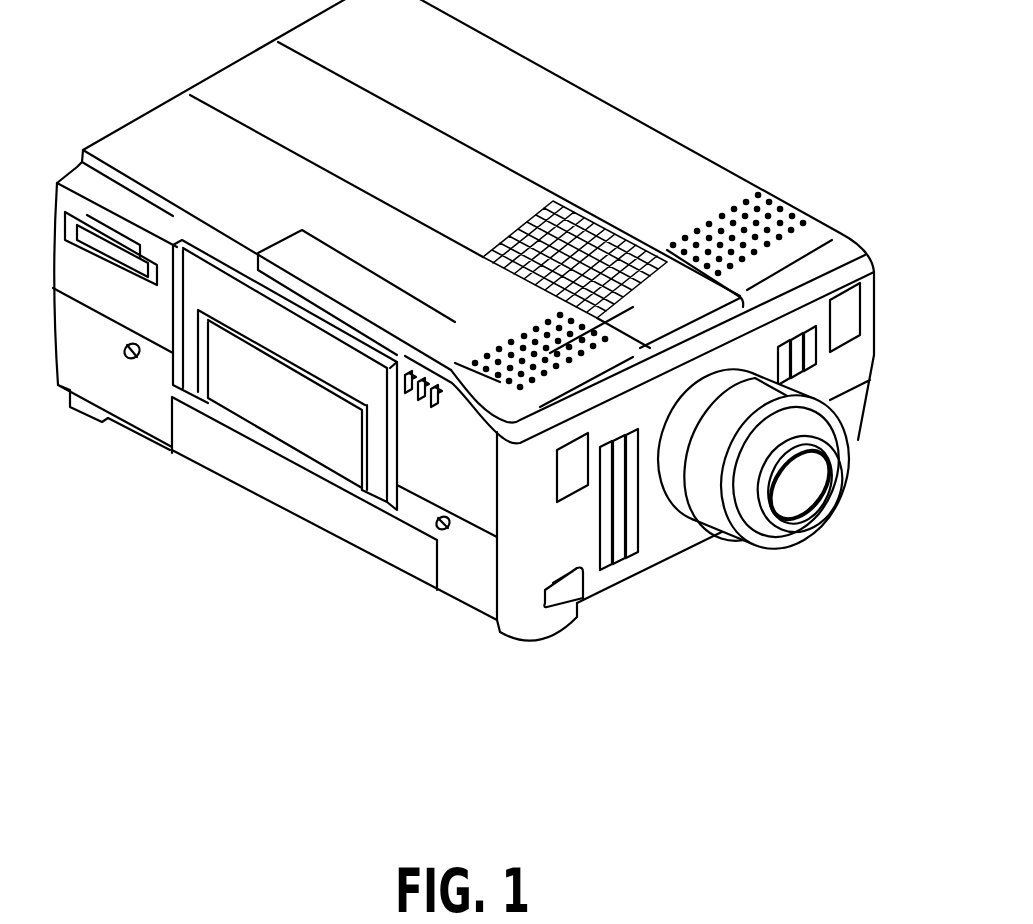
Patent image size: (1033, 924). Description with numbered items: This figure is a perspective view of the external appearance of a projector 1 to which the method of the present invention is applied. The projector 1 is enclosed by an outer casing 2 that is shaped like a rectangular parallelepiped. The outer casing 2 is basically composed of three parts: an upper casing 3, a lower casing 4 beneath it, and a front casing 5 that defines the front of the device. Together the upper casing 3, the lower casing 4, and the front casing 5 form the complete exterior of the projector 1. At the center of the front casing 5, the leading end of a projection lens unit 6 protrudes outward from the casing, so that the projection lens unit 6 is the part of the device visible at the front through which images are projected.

The projector 1 is at (657, 86).
The outer casing 2 is at (463, 483).
The upper casing 3 is at (427, 460).
The lower casing 4 is at (462, 577).
The front casing 5 is at (591, 574).
The projection lens unit 6 is at (800, 420).